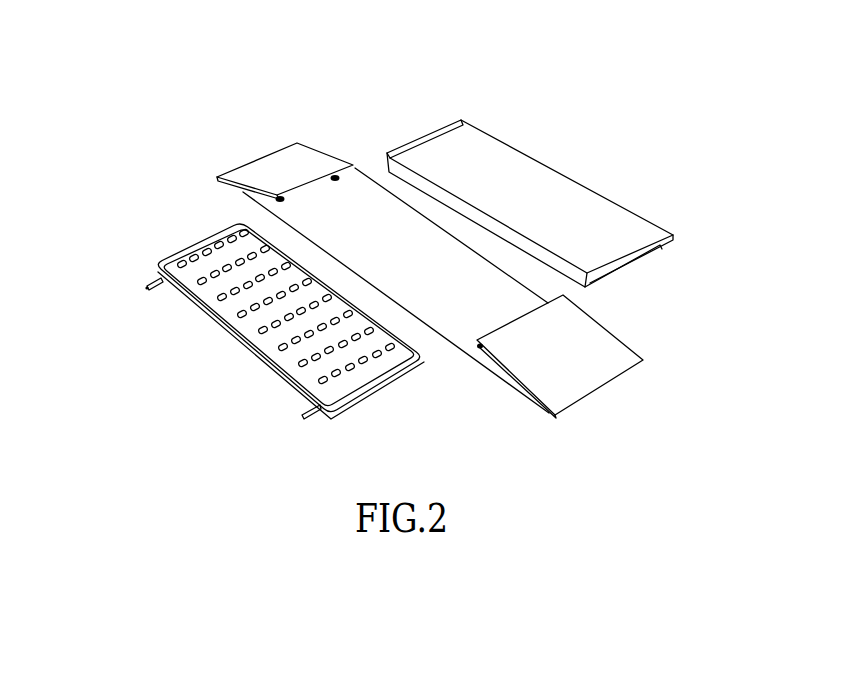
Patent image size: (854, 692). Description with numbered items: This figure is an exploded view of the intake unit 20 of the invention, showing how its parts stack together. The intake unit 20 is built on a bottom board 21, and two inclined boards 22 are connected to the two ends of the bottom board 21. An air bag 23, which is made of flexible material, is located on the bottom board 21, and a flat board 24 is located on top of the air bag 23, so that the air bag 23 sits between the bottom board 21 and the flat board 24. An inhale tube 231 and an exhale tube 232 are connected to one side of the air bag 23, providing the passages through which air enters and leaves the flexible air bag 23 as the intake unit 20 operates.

The intake unit 20 is at (299, 113).
The bottom board 21 is at (373, 228).
The inclined board 22 is at (580, 342).
The air bag 23 is at (211, 240).
The inhale tube 231 is at (147, 288).
The exhale tube 232 is at (303, 415).
The flat board 24 is at (532, 178).